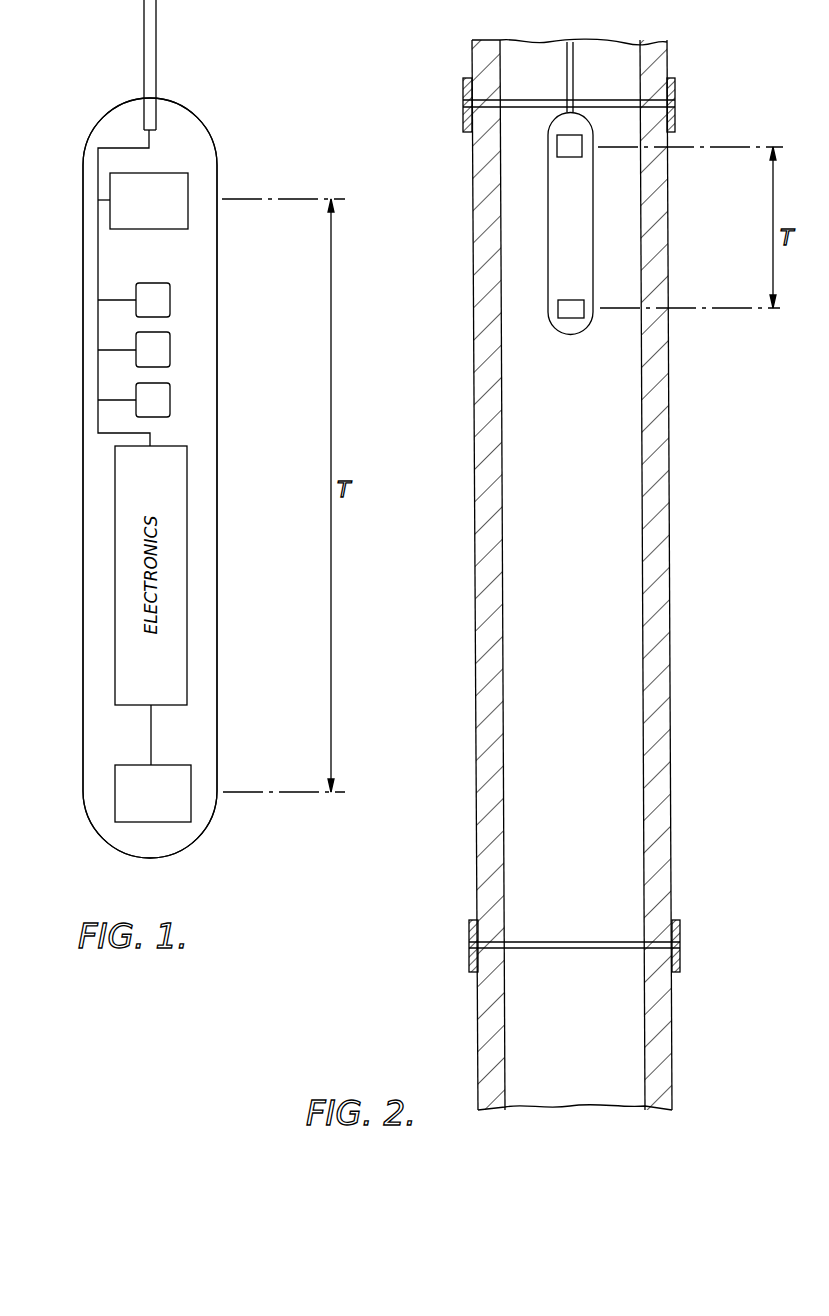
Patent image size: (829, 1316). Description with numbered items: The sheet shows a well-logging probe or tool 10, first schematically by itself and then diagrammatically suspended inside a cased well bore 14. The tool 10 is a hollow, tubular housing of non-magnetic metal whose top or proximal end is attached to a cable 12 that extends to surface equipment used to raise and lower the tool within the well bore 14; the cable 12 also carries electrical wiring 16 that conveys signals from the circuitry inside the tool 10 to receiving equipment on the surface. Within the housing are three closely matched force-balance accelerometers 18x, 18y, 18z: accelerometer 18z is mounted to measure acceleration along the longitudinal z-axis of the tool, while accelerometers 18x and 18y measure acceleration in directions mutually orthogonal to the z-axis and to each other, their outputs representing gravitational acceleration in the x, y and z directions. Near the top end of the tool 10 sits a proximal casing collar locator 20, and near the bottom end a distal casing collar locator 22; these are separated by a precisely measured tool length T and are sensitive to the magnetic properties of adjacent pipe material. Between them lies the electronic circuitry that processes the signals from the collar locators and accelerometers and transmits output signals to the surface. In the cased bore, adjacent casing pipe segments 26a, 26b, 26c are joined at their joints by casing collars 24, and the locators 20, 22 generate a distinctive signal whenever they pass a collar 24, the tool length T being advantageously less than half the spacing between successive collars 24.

In FIG. 1, the probe or tool 10 is at (240, 124).
In FIG. 2, the probe or tool 10 is at (536, 207).
In FIG. 1, the cable 12 is at (157, 62).
In FIG. 2, the cable 12 is at (565, 72).
In FIG. 2, the well bore 14 is at (612, 622).
In FIG. 1, the electrical wiring 16 is at (98, 170).
In FIG. 1, the accelerometer 18x is at (171, 306).
In FIG. 1, the accelerometer 18y is at (171, 357).
In FIG. 1, the accelerometer 18z is at (171, 410).
In FIG. 1, the top casing collar locator 20 is at (188, 181).
In FIG. 2, the top casing collar locator 20 is at (557, 145).
In FIG. 1, the bottom casing collar locator 22 is at (191, 816).
In FIG. 2, the bottom casing collar locator 22 is at (558, 306).
In FIG. 2, the casing collar 24 is at (463, 90).
In FIG. 2, the casing pipe segment 26a is at (472, 62).
In FIG. 2, the casing pipe segment 26b is at (477, 565).
In FIG. 2, the casing pipe segment 26c is at (478, 1040).